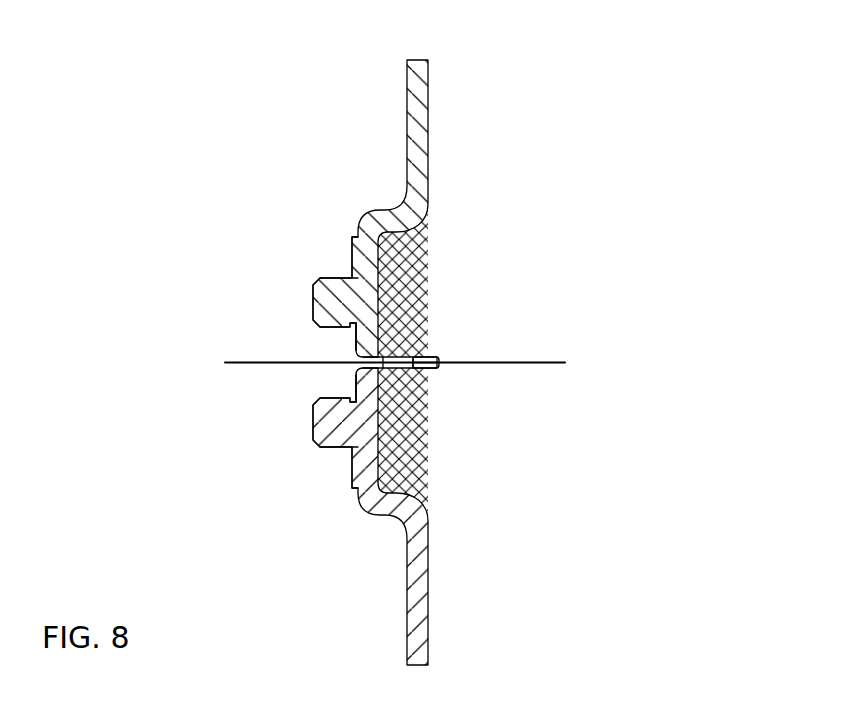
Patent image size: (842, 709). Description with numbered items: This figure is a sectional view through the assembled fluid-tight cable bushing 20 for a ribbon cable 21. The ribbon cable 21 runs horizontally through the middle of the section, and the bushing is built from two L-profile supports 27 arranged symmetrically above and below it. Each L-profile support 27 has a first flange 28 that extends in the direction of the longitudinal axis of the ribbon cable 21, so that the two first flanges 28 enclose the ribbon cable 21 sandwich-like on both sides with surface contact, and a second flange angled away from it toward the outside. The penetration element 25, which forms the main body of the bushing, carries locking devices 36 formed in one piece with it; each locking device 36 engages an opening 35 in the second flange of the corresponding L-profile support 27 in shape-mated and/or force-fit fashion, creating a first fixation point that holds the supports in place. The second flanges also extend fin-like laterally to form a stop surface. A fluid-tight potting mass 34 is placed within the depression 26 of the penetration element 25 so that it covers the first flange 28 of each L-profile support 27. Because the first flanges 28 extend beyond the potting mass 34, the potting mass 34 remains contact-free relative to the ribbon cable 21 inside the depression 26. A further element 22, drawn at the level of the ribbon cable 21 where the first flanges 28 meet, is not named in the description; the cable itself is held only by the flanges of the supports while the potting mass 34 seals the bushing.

The cable bushing 20 is at (548, 135).
The ribbon cable 21 is at (533, 364).
The membrane sheet 22 is at (425, 307).
The penetration element 25 is at (420, 128).
The depression 26 is at (388, 506).
The L-profile support 27 is at (357, 341).
The first flange 28 is at (433, 357).
The potting mass 34 is at (413, 262).
The opening 35 is at (350, 450).
The locking device 36 is at (333, 290).